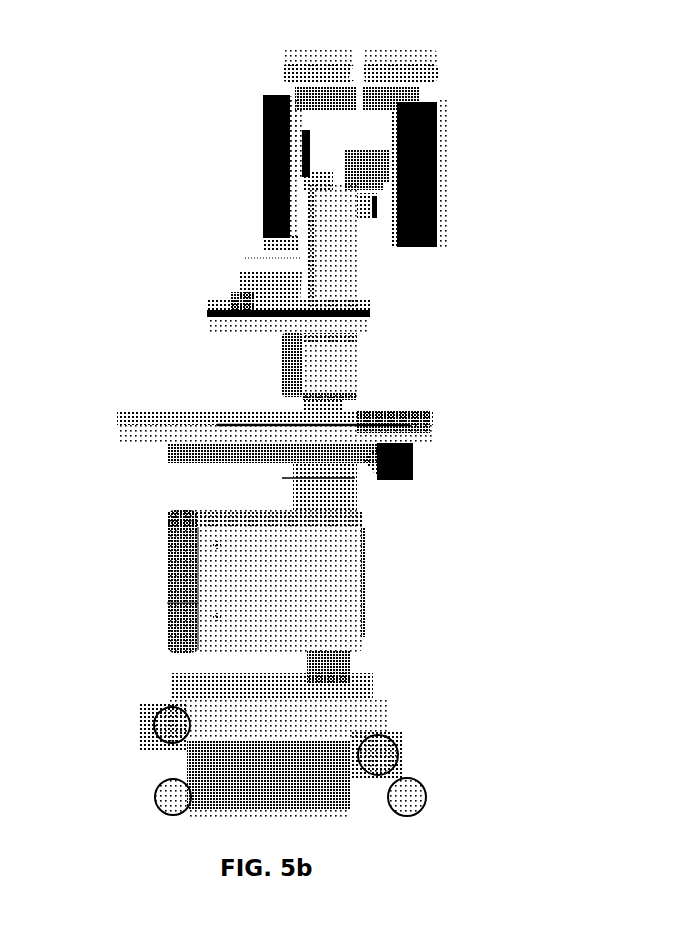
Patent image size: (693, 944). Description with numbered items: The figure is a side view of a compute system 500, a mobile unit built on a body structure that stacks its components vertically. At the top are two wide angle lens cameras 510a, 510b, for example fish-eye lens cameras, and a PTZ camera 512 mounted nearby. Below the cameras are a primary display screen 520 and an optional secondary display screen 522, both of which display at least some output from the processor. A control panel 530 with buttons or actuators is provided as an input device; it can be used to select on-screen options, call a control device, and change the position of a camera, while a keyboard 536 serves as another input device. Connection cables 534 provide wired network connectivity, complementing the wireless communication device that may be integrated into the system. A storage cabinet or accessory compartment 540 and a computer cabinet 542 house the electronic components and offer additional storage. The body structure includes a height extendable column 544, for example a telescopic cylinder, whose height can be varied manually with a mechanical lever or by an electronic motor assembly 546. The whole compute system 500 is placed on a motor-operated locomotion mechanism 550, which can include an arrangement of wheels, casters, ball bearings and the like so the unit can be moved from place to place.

The compute system 500 is at (587, 145).
The wide angle lens camera 510a is at (272, 71).
The wide angle lens camera 510b is at (447, 70).
The PTZ camera 512 is at (256, 270).
The primary display screen 520 is at (270, 158).
The secondary display screen 522 is at (453, 170).
The control panel 530 is at (287, 366).
The connection cables 534 is at (175, 459).
The keyboard 536 is at (330, 580).
The storage cabinet/accessory compartment 540 is at (235, 560).
The computer cabinet 542 is at (235, 630).
The height extendable column 544 is at (345, 407).
The electronic motor assembly 546 is at (305, 765).
The motor-operated locomotion mechanism 550 is at (145, 758).